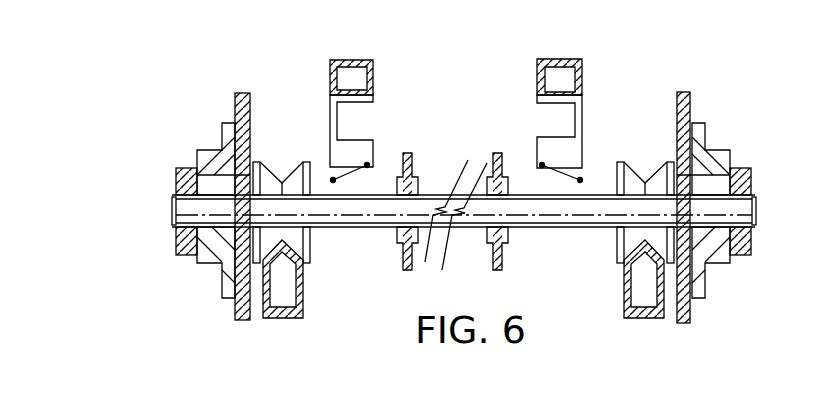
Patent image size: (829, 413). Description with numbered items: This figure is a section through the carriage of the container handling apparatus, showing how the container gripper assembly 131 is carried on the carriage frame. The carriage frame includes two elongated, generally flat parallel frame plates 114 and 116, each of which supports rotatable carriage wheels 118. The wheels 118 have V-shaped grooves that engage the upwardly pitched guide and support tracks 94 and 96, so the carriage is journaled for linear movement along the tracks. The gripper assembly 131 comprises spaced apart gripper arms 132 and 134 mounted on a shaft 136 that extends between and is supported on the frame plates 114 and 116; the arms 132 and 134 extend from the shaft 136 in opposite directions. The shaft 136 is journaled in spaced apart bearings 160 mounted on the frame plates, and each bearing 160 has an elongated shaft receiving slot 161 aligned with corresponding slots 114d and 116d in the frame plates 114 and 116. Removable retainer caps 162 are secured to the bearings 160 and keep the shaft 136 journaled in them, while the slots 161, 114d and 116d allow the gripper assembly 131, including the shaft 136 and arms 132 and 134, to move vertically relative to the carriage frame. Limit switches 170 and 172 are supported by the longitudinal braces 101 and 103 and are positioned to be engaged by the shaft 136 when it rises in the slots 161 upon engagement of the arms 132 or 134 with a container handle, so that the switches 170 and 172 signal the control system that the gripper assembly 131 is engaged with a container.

The guide and support track 94 is at (307, 307).
The guide and support track 96 is at (617, 320).
The longitudinal frame brace 101 is at (355, 61).
The longitudinal frame brace 103 is at (562, 58).
The frame plate 114 is at (235, 103).
The slot 114d is at (267, 177).
The frame plate 116 is at (690, 105).
The slot 116d is at (643, 182).
The carriage wheel 118 is at (310, 233).
The container gripper assembly 131 is at (702, 338).
The gripper arm 132 is at (403, 260).
The gripper arm 134 is at (505, 155).
The shaft 136 is at (538, 230).
The bearing 160 is at (210, 268).
The shaft receiving slot 161 is at (210, 176).
The retainer cap 162 is at (190, 168).
The limit switch 170 is at (377, 150).
The limit switch 172 is at (537, 148).